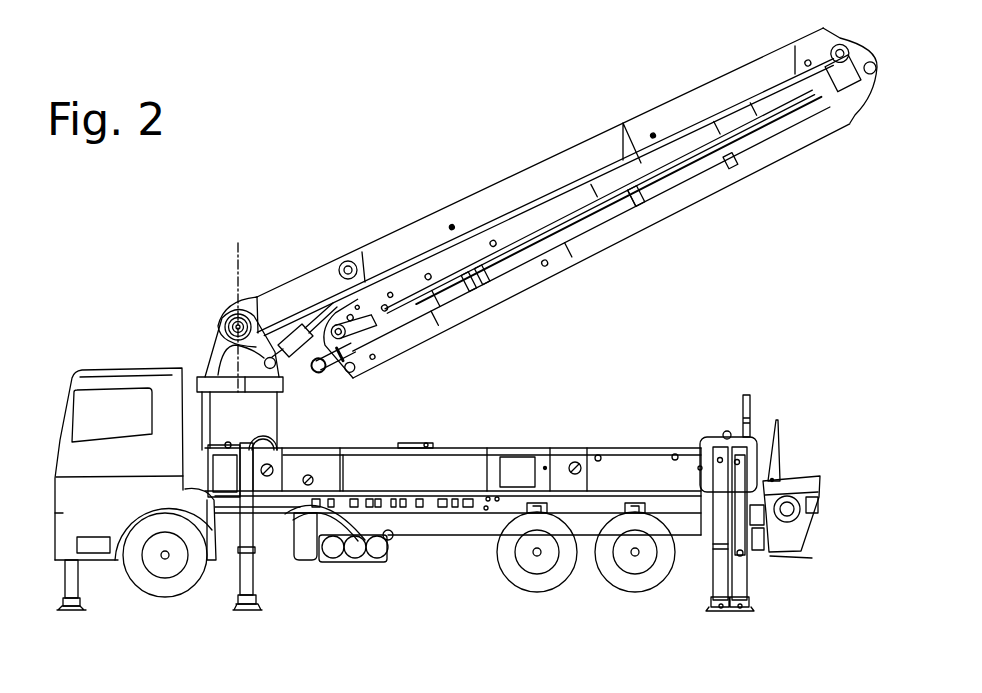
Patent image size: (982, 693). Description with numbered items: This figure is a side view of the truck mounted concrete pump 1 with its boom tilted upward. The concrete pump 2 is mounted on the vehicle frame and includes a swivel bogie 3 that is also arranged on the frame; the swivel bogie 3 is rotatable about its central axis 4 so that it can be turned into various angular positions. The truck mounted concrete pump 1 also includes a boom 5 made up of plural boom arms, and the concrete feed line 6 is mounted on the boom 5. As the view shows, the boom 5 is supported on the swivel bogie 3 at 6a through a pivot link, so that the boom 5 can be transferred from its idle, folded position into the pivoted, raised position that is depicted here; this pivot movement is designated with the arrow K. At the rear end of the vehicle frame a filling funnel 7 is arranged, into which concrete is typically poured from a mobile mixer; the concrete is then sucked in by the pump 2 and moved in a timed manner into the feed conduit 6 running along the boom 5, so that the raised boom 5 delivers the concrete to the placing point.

The truck mounted concrete pump 1 is at (426, 157).
The concrete pump 2 is at (462, 475).
The swivel bogie 3 is at (225, 360).
The central axis 4 is at (254, 240).
The boom 5 is at (527, 183).
The concrete feed line 6 is at (687, 178).
The pivot link 6a is at (247, 315).
The filling funnel 7 is at (792, 488).
The arrow (pivot movement) K is at (727, 350).